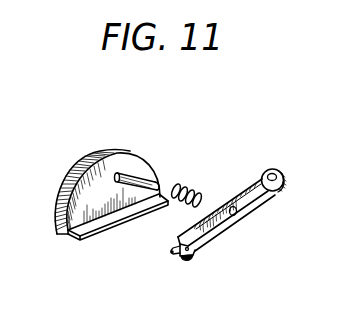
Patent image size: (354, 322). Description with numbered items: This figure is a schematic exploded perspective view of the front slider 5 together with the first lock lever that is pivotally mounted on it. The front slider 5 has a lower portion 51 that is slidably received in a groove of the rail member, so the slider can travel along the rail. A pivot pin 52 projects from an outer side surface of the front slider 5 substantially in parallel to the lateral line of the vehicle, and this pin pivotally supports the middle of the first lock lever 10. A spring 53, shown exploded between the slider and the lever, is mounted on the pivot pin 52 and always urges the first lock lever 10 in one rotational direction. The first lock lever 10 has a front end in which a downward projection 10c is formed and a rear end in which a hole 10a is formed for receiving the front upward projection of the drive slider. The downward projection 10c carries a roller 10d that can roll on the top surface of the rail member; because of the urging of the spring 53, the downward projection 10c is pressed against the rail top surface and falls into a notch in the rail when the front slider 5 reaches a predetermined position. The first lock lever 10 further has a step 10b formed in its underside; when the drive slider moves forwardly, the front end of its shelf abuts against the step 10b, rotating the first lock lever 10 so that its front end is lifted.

The front slider 5 is at (63, 170).
The lower portion 51 is at (73, 242).
The pivot pin 52 is at (144, 175).
The spring 53 is at (188, 188).
The first lock lever 10 is at (254, 203).
The hole 10a is at (269, 170).
The step 10b is at (234, 216).
The downward projection 10c is at (193, 250).
The roller 10d is at (185, 260).